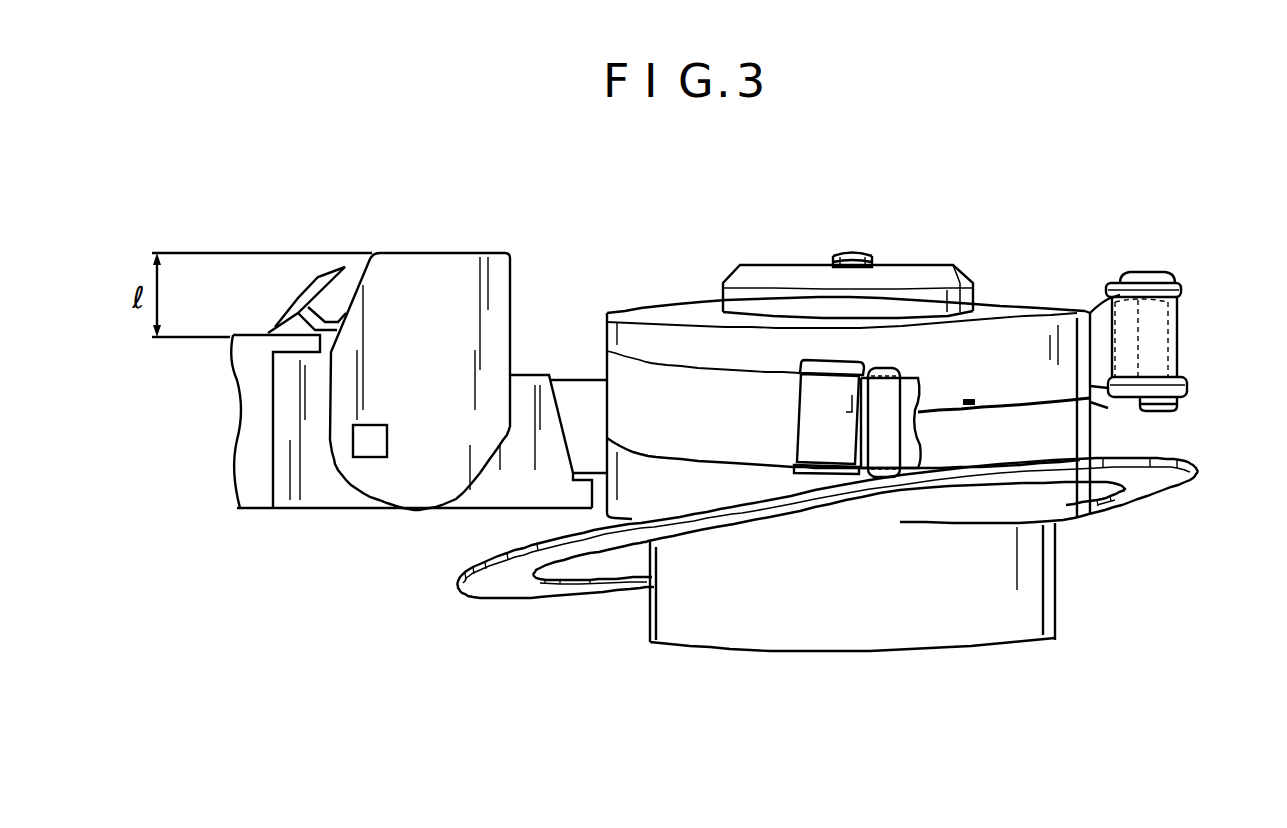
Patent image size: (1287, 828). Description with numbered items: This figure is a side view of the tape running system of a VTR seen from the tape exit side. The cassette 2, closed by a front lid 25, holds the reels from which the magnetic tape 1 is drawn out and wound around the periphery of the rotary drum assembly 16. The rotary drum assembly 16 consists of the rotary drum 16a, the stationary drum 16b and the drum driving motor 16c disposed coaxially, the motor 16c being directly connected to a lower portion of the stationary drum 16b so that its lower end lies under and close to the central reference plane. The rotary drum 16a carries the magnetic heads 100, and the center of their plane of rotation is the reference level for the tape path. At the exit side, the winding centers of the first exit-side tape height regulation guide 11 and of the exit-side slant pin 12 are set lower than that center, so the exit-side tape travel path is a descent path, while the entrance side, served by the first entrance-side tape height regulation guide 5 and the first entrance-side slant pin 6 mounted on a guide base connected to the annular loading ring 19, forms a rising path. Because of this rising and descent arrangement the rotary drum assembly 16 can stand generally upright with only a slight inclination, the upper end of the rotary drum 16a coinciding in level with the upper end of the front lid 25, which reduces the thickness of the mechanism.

The magnetic tape 1 is at (577, 403).
The cassette 2 is at (313, 485).
The first entrance-side tape height regulation guide 5 is at (1147, 272).
The first entrance-side slant pin 6 is at (1165, 411).
The first exit-side tape height regulation guide 11 is at (824, 362).
The exit-side slant pin 12 is at (885, 368).
The rotary drum assembly 16 is at (872, 477).
The rotary drum 16a is at (1047, 350).
The stationary drum 16b is at (1067, 500).
The drum driving motor 16c is at (741, 601).
The loading ring 19 is at (498, 585).
The front lid 25 is at (445, 280).
The magnetic heads 100 is at (966, 401).